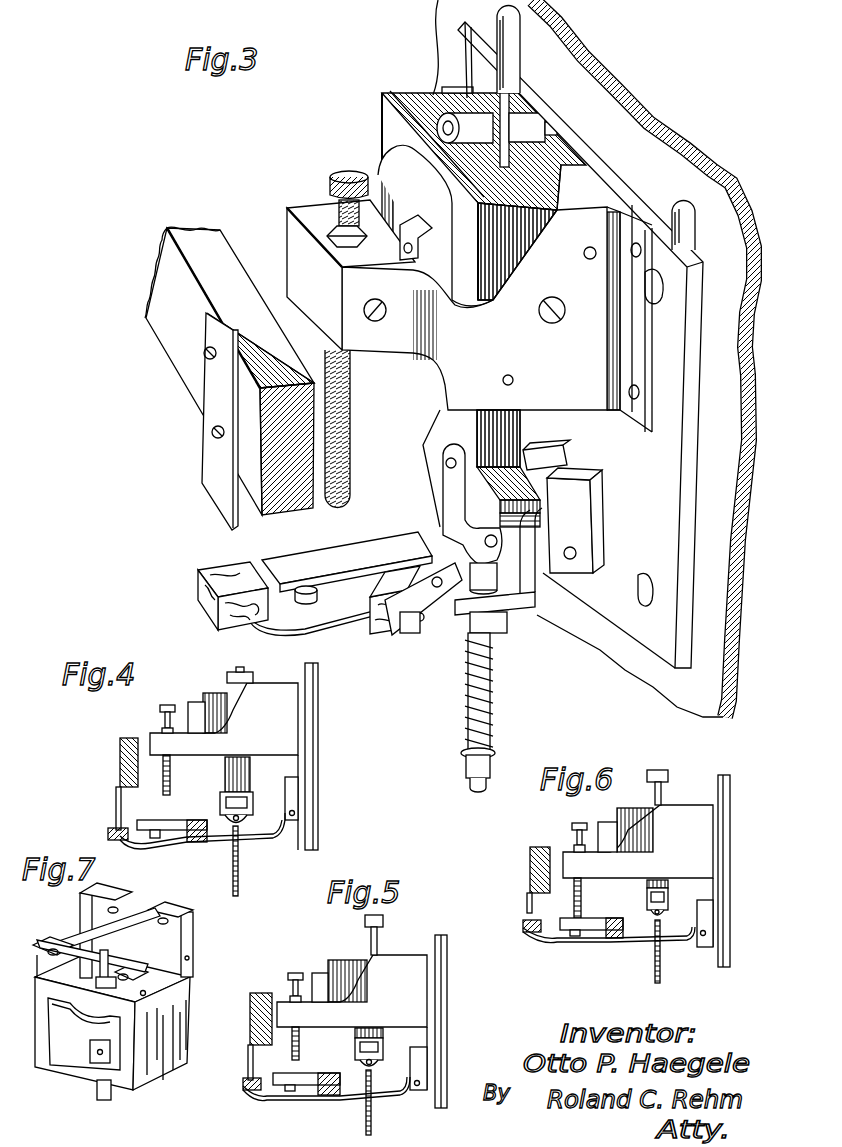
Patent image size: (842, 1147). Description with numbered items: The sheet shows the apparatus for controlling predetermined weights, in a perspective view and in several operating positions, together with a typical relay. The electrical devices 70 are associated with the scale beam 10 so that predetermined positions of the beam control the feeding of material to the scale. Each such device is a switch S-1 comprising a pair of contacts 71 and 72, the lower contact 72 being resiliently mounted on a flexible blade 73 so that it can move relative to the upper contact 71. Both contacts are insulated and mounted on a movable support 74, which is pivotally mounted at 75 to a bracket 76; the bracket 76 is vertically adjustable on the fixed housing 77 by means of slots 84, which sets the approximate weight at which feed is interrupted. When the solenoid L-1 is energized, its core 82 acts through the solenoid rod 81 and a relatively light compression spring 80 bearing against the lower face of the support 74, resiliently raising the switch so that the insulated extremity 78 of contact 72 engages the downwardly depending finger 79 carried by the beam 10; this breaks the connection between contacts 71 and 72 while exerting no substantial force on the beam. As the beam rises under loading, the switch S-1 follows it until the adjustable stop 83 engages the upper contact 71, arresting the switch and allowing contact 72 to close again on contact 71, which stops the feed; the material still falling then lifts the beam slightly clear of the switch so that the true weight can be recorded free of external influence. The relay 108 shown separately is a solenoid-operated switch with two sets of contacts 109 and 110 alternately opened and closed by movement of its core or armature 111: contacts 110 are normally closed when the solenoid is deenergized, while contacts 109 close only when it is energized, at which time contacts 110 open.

In FIG. 3, the scale beam 10 is at (143, 321).
In FIG. 4, the scale beam 10 is at (132, 738).
In FIG. 6, the scale beam 10 is at (545, 845).
In FIG. 3, the electrical devices 70 is at (309, 200).
In FIG. 4, the electrical devices 70 is at (156, 733).
In FIG. 6, the electrical devices 70 is at (680, 810).
In FIG. 3, the contact 71 is at (313, 567).
In FIG. 3, the contact 72 is at (307, 602).
In FIG. 3, the flexible blade 73 is at (350, 607).
In FIG. 3, the movable support 74 is at (450, 622).
In FIG. 3, the pivot 75 is at (578, 553).
In FIG. 3, the bracket 76 is at (692, 490).
In FIG. 3, the fixed housing 77 is at (742, 568).
In FIG. 3, the insulated extremity 78 is at (198, 588).
In FIG. 4, the insulated extremity 78 is at (112, 830).
In FIG. 3, the finger 79 is at (203, 470).
In FIG. 4, the finger 79 is at (115, 798).
In FIG. 5, the finger 79 is at (248, 1070).
In FIG. 3, the compression spring 80 is at (488, 713).
In FIG. 3, the solenoid rod 81 is at (468, 783).
In FIG. 3, the core 82 is at (520, 436).
In FIG. 4, the core 82 is at (248, 778).
In FIG. 3, the adjustable stop 83 is at (352, 480).
In FIG. 4, the adjustable stop 83 is at (171, 773).
In FIG. 6, the adjustable stop 83 is at (584, 900).
In FIG. 3, the slots 84 is at (512, 28).
In FIG. 7, the electrically operated switch 108 is at (203, 1013).
In FIG. 7, the contacts 109 is at (133, 900).
In FIG. 7, the contacts 110 is at (32, 941).
In FIG. 7, the core or armature 111 is at (100, 973).
In FIG. 3, the solenoid L-1 is at (555, 180).
In FIG. 4, the solenoid L-1 is at (232, 698).
In FIG. 5, the solenoid L-1 is at (335, 956).
In FIG. 6, the solenoid L-1 is at (625, 815).
In FIG. 3, the switch S-1 is at (398, 540).
In FIG. 4, the switch S-1 is at (176, 840).
In FIG. 5, the switch S-1 is at (318, 1095).
In FIG. 6, the switch S-1 is at (601, 942).